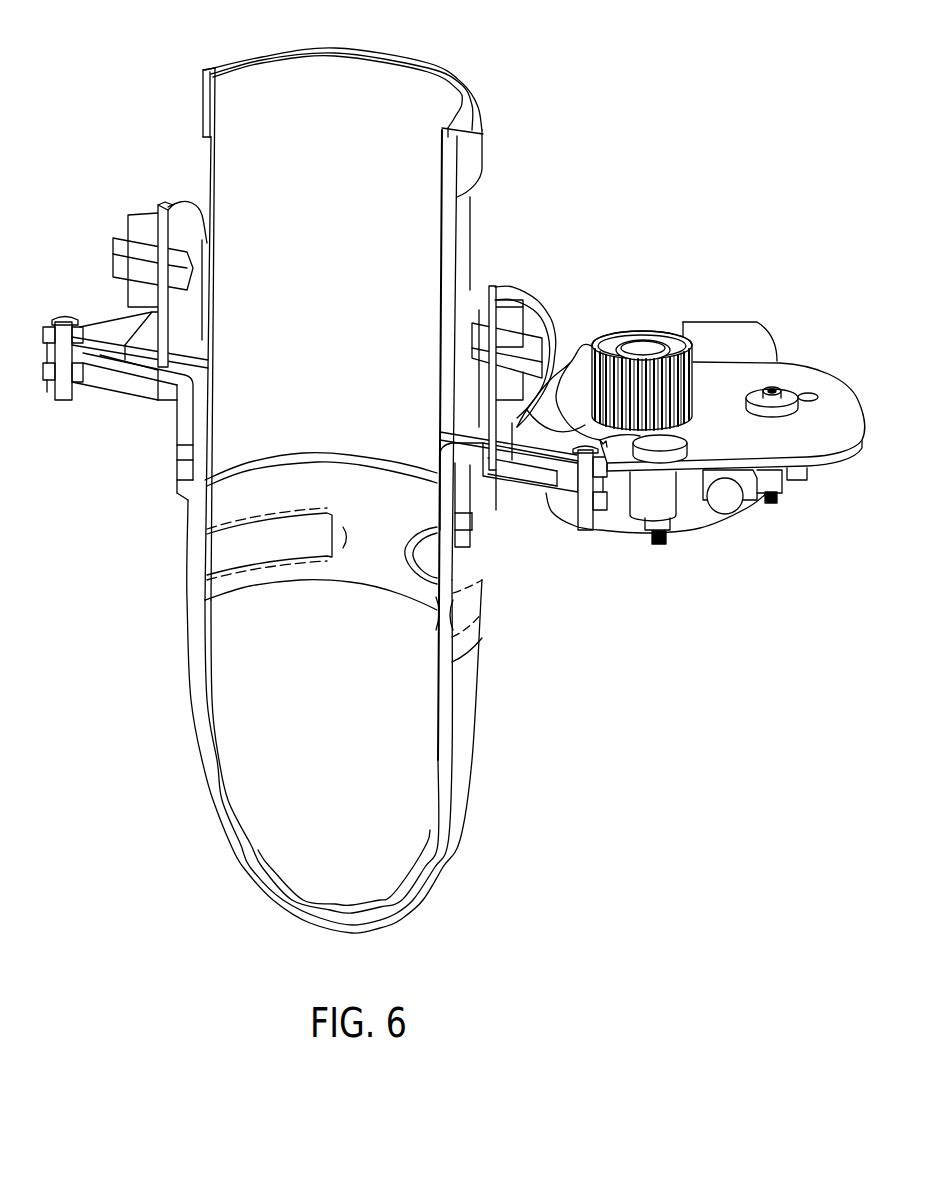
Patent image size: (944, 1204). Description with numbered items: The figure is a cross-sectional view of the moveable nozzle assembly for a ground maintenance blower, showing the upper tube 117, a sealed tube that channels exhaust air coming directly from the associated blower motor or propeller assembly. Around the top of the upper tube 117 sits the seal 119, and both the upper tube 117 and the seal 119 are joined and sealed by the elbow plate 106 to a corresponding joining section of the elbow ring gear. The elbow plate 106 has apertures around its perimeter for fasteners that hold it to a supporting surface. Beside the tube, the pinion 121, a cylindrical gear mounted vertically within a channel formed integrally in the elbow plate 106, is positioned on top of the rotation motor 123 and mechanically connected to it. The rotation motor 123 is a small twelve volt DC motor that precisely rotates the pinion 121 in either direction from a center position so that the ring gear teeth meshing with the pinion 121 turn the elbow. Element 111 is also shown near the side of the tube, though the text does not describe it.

The elbow plate 106 is at (810, 378).
The tube support lug 111 is at (542, 296).
The upper tube 117 is at (460, 232).
The seal 119 is at (470, 146).
The pinion 121 is at (647, 347).
The rotation motor 123 is at (733, 333).